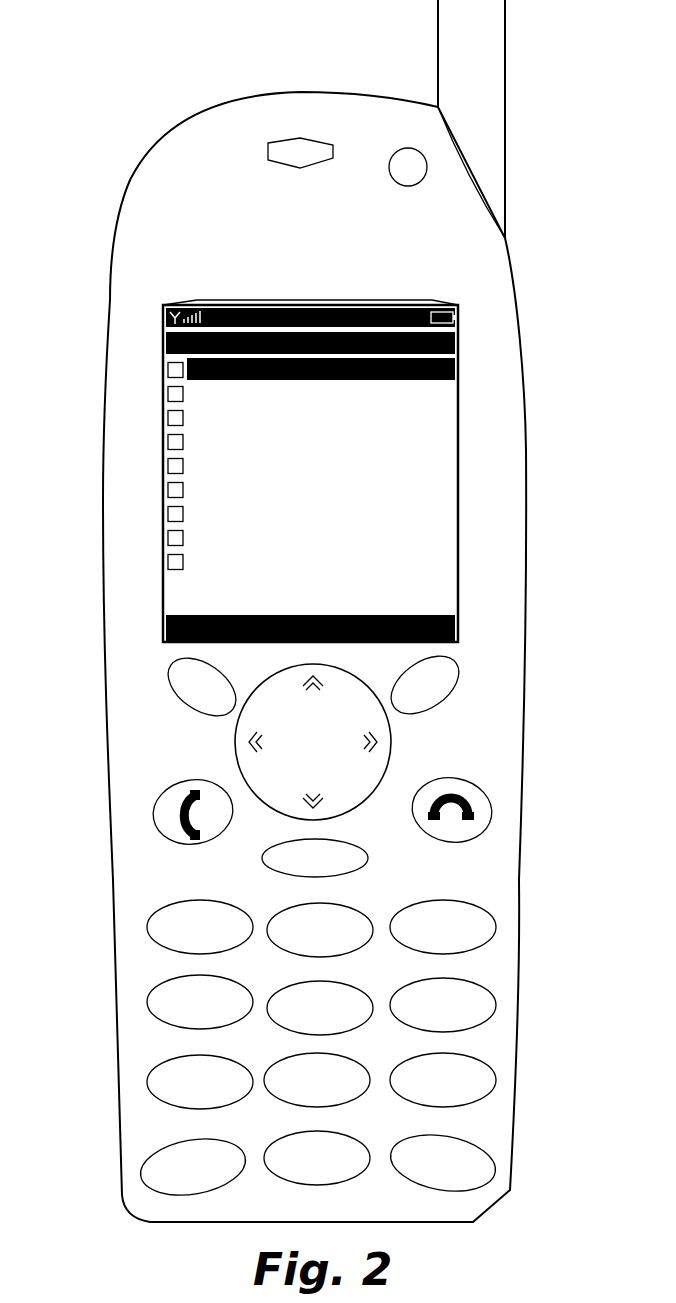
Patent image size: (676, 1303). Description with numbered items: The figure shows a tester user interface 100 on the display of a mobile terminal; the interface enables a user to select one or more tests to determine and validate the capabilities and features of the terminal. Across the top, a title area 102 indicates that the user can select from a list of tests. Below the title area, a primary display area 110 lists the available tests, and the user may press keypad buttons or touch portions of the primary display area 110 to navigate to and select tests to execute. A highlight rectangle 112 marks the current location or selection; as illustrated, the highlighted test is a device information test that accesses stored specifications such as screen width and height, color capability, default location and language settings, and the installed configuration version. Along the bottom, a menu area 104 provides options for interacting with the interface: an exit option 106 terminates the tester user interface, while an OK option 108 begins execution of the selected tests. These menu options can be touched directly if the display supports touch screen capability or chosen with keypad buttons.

The tester user interface 100 is at (467, 419).
The title area 102 is at (163, 340).
The menu area 104 is at (316, 585).
The exit option 106 is at (163, 615).
The OK option 108 is at (457, 610).
The primary display area 110 is at (377, 464).
The highlight rectangle 112 is at (407, 380).